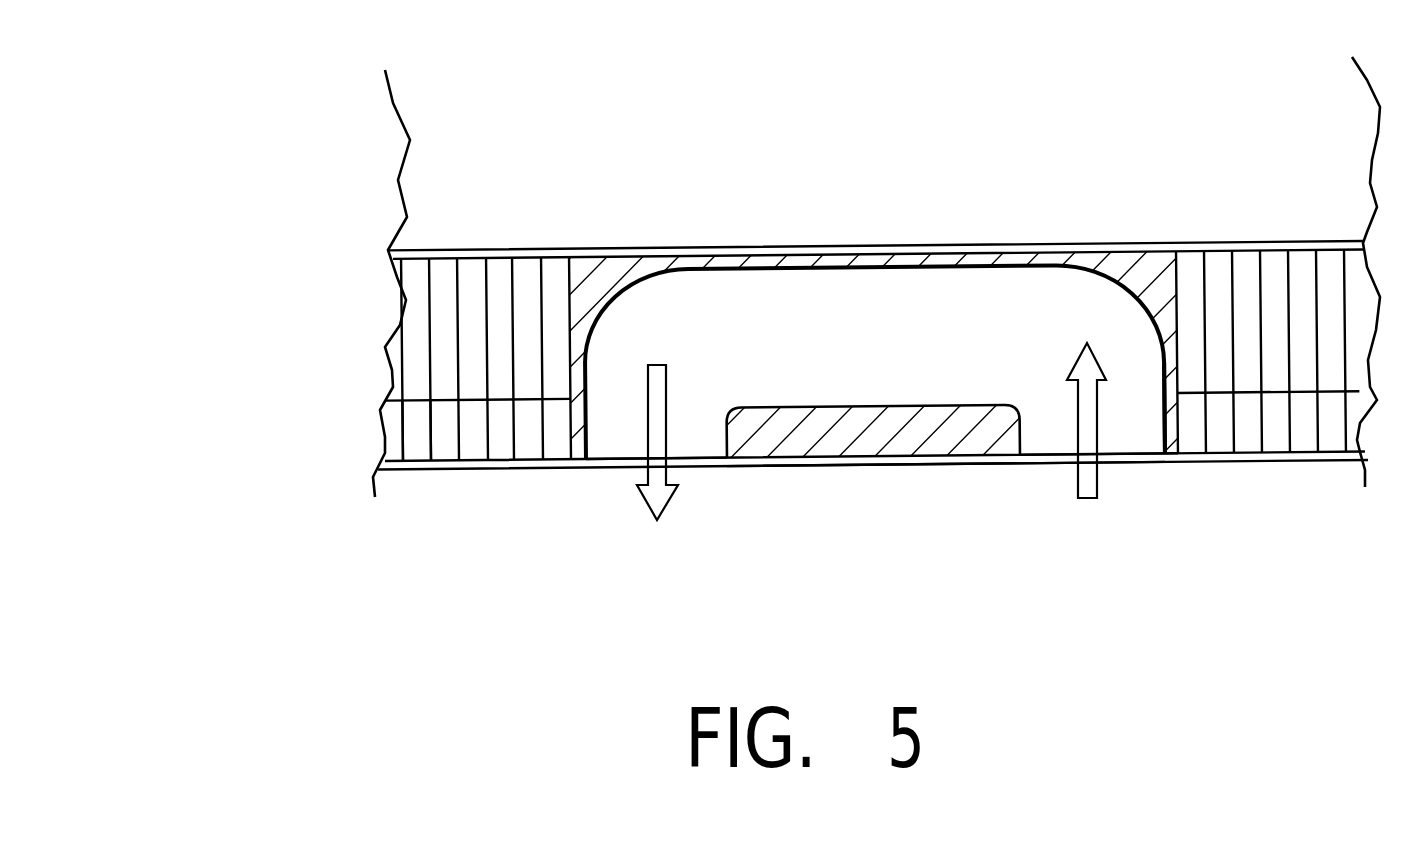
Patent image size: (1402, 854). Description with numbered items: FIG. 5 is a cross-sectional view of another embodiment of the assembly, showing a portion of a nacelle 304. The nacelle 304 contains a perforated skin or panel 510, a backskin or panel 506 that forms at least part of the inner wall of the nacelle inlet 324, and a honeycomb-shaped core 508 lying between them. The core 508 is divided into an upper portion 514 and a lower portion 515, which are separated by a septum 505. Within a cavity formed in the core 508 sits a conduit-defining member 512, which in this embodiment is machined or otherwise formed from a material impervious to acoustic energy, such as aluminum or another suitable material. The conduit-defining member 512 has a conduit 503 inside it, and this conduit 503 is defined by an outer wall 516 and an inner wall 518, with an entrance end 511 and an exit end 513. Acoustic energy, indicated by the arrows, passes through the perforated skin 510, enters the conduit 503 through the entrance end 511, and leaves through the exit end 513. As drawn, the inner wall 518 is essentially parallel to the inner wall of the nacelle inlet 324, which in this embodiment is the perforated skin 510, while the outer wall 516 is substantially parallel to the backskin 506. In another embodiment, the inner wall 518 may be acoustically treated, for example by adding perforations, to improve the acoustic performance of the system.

The nacelle 304 is at (403, 127).
The backskin 506 is at (1248, 237).
The honeycomb-shaped core 508 is at (290, 472).
The upper portion 514 is at (503, 295).
The lower portion 515 is at (418, 440).
The septum 505 is at (527, 400).
The conduit-defining member 512 is at (1143, 273).
The outer wall 516 is at (933, 269).
The conduit 503 is at (772, 338).
The inner wall 518 is at (840, 405).
The exit end 513 is at (693, 427).
The nacelle inlet 324 is at (897, 467).
The perforated skin 510 is at (1157, 455).
The entrance end 511 is at (1133, 417).